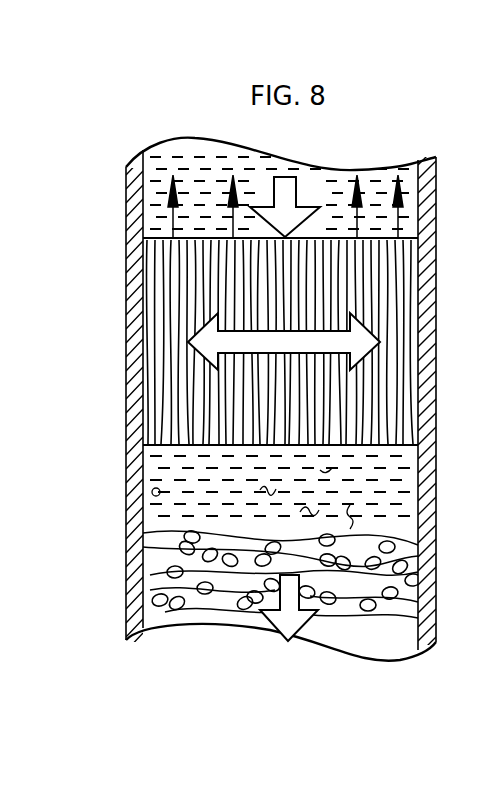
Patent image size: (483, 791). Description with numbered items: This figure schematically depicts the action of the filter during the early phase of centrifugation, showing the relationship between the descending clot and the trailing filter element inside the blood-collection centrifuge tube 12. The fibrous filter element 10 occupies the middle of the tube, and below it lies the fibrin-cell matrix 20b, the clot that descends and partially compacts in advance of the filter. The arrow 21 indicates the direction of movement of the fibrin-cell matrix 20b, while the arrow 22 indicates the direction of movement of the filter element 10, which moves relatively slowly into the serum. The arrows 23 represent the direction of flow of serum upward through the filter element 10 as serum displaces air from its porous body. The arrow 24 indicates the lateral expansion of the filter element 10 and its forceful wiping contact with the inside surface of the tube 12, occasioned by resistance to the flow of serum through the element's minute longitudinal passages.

The fibrous filter element 10 is at (395, 300).
The blood-collection centrifuge tube 12 is at (118, 220).
The fibrin-cell matrix 20b is at (152, 601).
The arrow indicating movement of the fibrin-cell matrix 21 is at (280, 628).
The arrow indicating movement of the filter element 22 is at (295, 182).
The arrows representing flow of serum through the filter element 23 is at (400, 213).
The arrow indicating lateral expansion of the filter element 24 is at (200, 334).